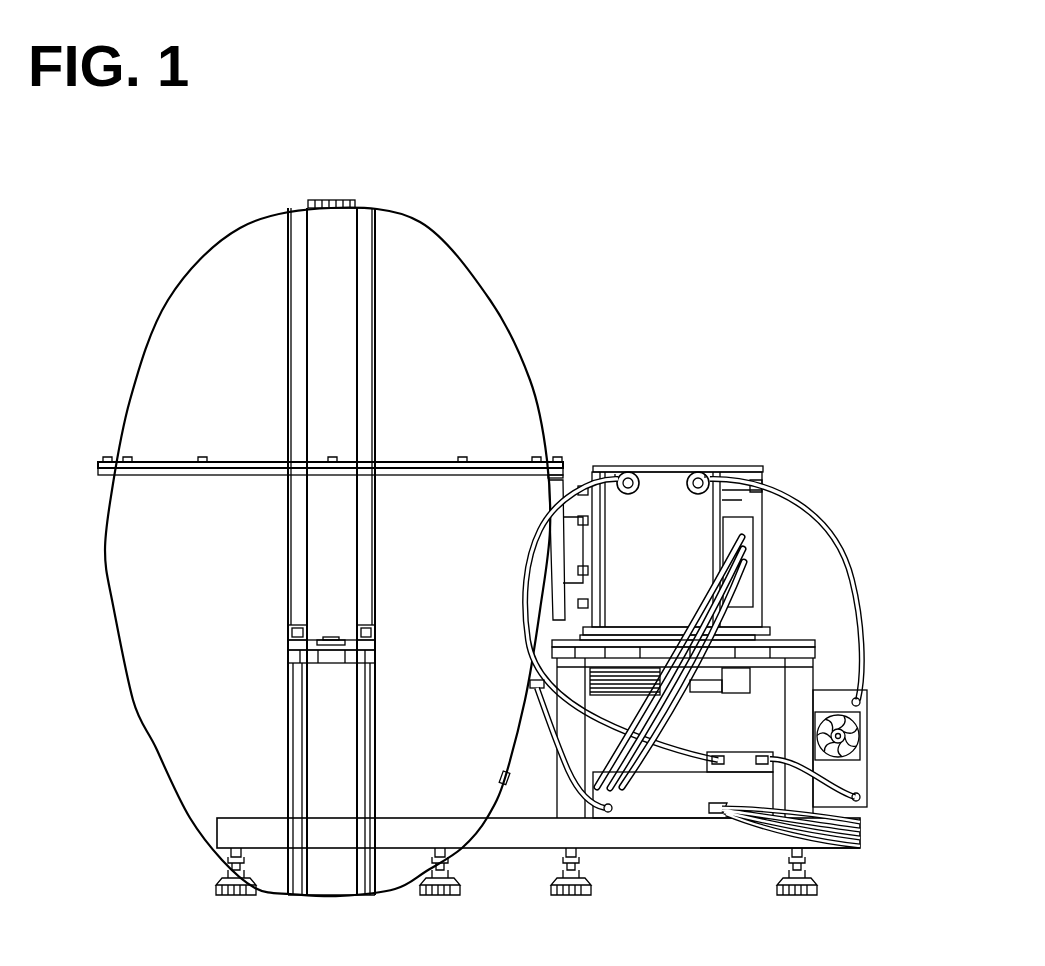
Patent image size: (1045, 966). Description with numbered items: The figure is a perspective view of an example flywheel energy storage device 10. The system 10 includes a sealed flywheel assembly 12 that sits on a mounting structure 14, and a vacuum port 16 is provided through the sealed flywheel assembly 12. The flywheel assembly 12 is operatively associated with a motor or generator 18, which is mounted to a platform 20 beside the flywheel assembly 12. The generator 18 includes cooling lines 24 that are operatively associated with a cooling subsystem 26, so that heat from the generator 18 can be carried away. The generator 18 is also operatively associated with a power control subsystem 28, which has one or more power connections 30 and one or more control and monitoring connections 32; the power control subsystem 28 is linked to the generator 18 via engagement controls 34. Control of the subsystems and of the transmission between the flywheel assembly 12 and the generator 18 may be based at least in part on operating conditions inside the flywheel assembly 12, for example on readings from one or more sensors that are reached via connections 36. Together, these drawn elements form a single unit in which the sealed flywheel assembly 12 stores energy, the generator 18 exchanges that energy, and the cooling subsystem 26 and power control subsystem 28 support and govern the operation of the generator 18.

The flywheel energy storage device 10 is at (757, 300).
The sealed flywheel assembly 12 is at (172, 292).
The mounting structure 14 is at (255, 819).
The vacuum port 16 is at (504, 775).
The motor or generator 18 is at (609, 466).
The platform 20 is at (778, 640).
The cooling lines 24 is at (736, 472).
The cooling subsystem 26 is at (863, 712).
The power control subsystem 28 is at (685, 820).
The power connections 30 is at (862, 824).
The control and monitoring connections 32 is at (852, 850).
The engagement controls 34 is at (708, 694).
The sensor connections 36 is at (566, 800).